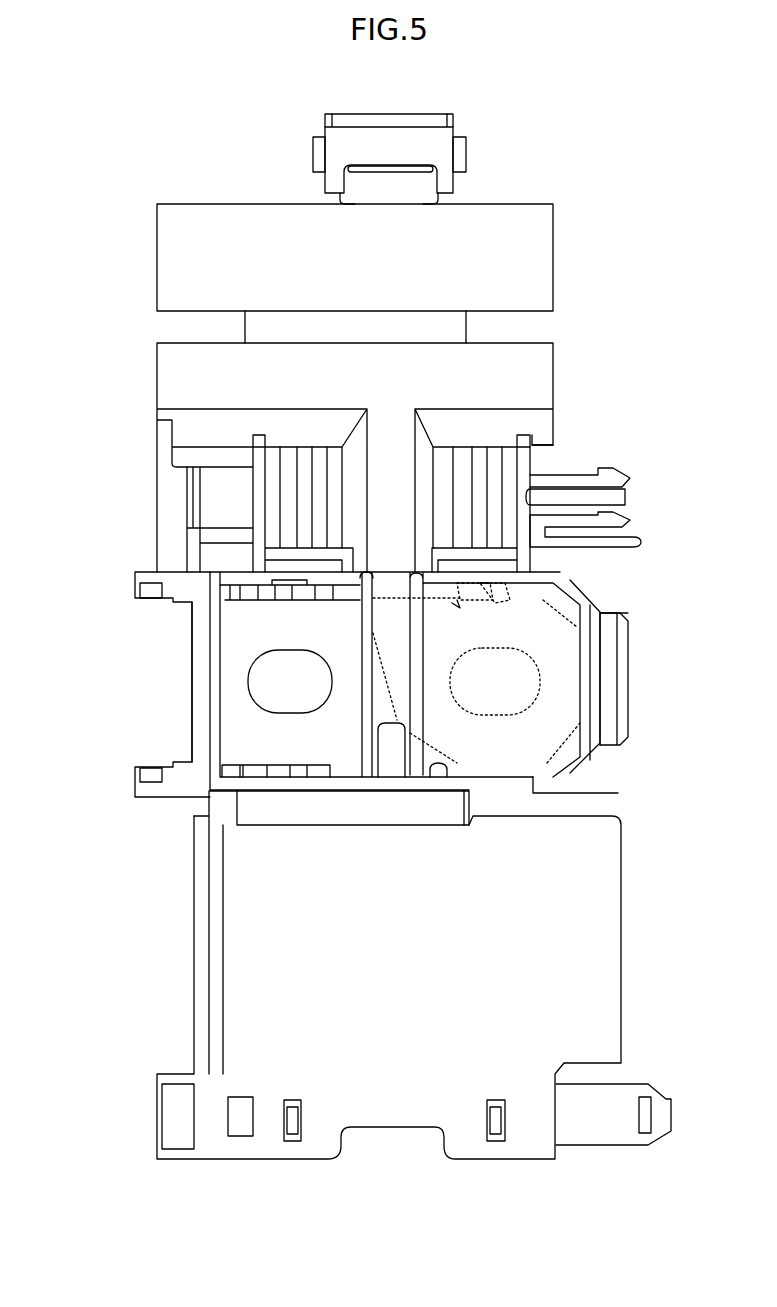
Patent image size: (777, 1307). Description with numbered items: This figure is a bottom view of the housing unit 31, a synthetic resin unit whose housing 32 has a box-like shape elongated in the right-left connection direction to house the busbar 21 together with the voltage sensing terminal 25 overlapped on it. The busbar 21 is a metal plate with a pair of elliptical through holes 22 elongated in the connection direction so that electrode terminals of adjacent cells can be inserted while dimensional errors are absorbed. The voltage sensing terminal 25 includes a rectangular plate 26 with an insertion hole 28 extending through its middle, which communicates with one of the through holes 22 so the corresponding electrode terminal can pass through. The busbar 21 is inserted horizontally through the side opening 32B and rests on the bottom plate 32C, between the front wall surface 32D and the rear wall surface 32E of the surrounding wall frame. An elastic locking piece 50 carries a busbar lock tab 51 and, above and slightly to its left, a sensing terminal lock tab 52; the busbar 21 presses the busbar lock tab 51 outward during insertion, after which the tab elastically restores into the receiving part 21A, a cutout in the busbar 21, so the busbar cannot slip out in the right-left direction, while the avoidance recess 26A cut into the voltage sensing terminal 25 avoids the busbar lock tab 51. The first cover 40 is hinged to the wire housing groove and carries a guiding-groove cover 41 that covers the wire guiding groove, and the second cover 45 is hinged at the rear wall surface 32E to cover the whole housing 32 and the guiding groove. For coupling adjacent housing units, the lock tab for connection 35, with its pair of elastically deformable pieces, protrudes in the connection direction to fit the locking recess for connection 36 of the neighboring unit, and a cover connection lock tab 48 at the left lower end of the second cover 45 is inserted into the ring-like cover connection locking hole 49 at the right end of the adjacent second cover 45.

The busbar 21 is at (243, 747).
The receiving part 21A is at (497, 593).
The through hole 22 is at (297, 705).
The voltage sensing terminal 25 is at (678, 663).
The plate 26 is at (557, 657).
The avoidance recess 26A is at (375, 598).
The insertion hole 28 is at (530, 697).
The housing unit 31 is at (113, 278).
The housing 32 is at (59, 596).
The side opening 32B is at (150, 768).
The bottom plate 32C is at (200, 675).
The front wall surface 32D is at (220, 587).
The rear wall surface 32E is at (455, 762).
The lock tab for connection 35 is at (628, 478).
The locking recess for connection 36 is at (187, 493).
The first cover 40 is at (508, 225).
The guiding-groove cover 41 is at (412, 137).
The second cover 45 is at (610, 912).
The cover connection lock tab 48 is at (628, 1100).
The cover connection locking hole 49 is at (173, 1118).
The elastic locking piece 50 is at (448, 612).
The busbar lock tab 51 is at (468, 583).
The sensing terminal lock tab 52 is at (497, 583).